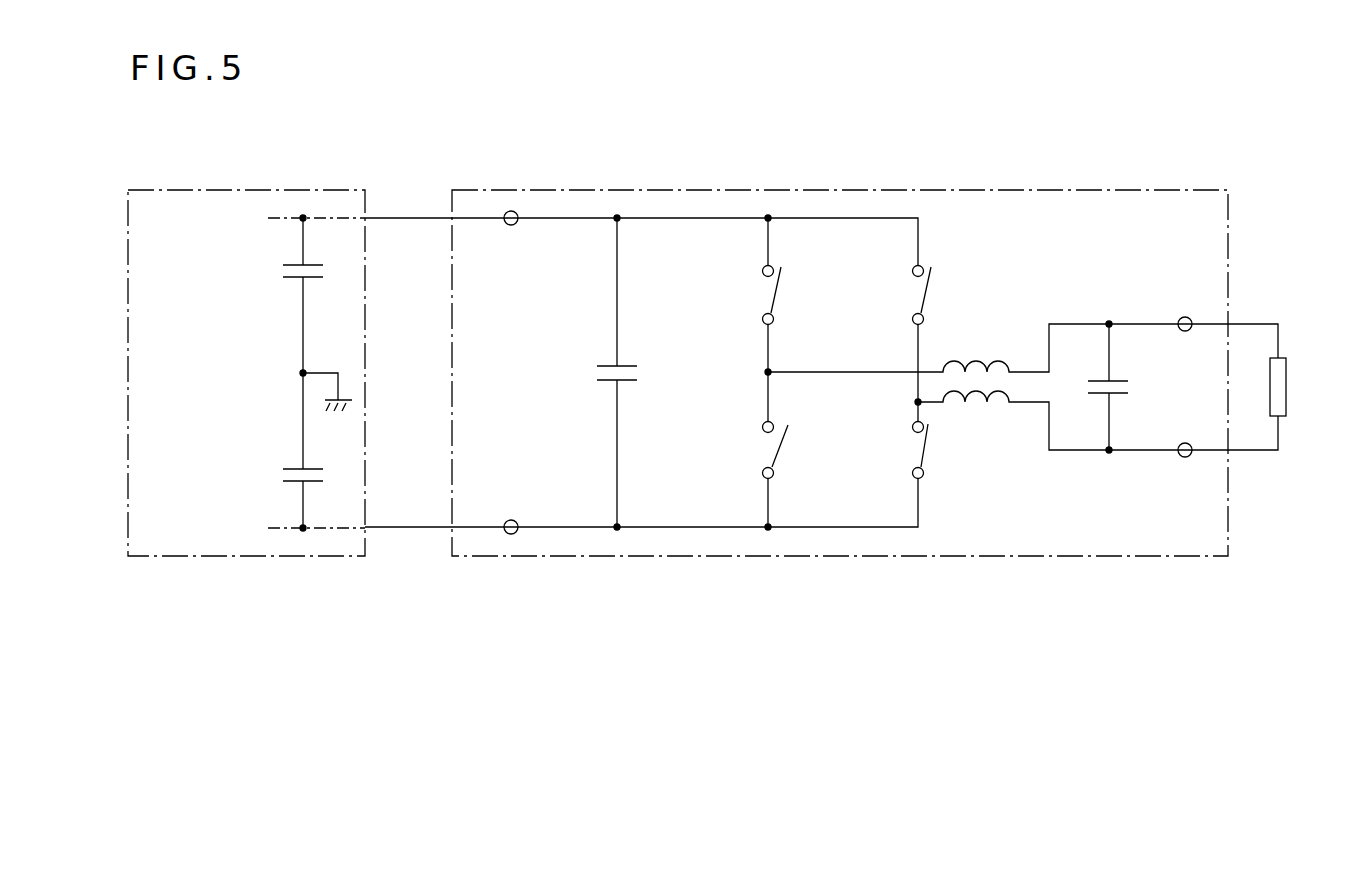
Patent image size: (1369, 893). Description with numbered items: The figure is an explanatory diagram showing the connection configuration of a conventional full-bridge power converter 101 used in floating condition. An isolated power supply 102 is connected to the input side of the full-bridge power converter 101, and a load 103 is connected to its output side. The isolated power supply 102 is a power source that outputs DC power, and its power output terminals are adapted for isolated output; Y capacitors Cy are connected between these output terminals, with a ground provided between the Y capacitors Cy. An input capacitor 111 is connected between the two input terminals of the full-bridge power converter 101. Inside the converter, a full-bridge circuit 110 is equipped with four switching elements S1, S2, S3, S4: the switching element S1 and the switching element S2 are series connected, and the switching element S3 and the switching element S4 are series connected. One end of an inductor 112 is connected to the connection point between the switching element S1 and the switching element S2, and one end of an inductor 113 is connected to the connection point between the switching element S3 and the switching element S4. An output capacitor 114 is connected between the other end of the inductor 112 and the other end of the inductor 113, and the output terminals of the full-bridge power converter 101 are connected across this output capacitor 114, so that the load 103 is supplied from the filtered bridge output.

The isolated power supply 102 is at (254, 190).
The Y capacitors Cy is at (276, 313).
The full-bridge power converter 101 is at (1025, 190).
The full-bridge circuit 110 is at (838, 203).
The switching element S1 is at (762, 292).
The switching element S2 is at (762, 448).
The switching element S3 is at (912, 292).
The switching element S4 is at (912, 448).
The input capacitor 111 is at (592, 372).
The inductor 112 is at (980, 357).
The inductor 113 is at (980, 404).
The output capacitor 114 is at (1118, 381).
The load 103 is at (1288, 388).